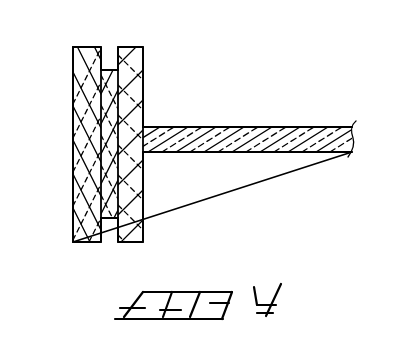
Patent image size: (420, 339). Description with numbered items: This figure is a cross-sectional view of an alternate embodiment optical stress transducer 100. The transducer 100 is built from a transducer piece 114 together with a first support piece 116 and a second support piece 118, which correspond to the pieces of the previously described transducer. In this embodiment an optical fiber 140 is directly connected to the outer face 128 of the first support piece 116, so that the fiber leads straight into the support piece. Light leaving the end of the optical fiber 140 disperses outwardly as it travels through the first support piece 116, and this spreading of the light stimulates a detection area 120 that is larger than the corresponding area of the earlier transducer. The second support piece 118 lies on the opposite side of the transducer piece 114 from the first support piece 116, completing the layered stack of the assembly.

The optical stress transducer 100 is at (198, 35).
The transducer piece 114 is at (109, 70).
The first support piece 116 is at (144, 62).
The second support piece 118 is at (82, 47).
The detection area 120 is at (80, 188).
The outer face 128 is at (145, 118).
The optical fiber 140 is at (240, 127).